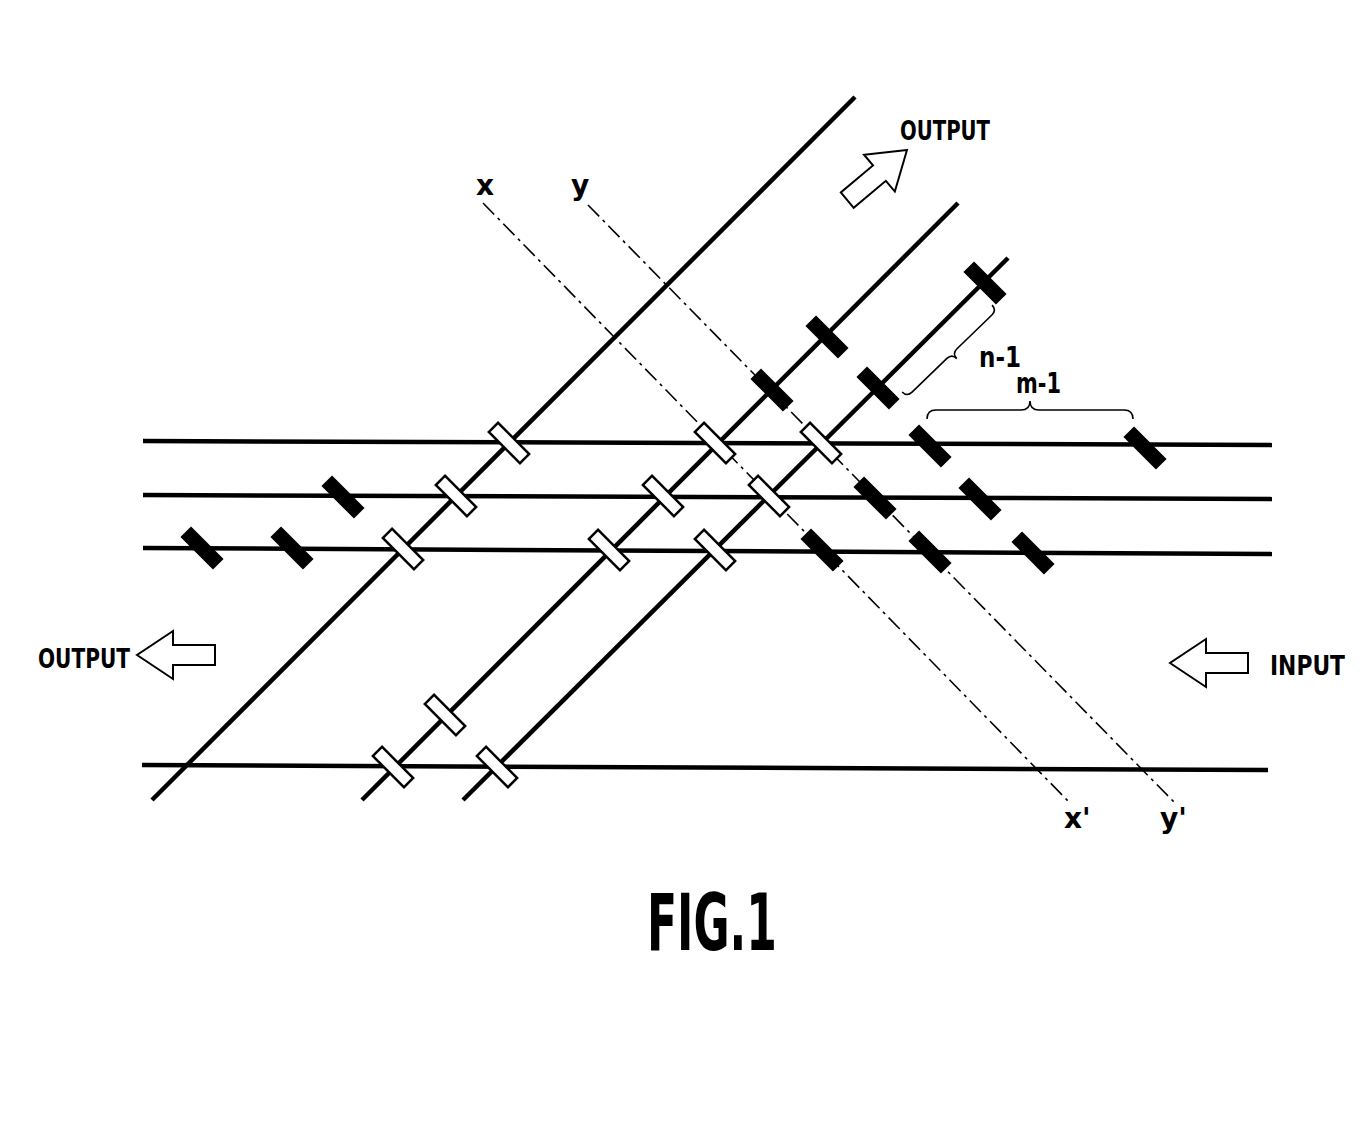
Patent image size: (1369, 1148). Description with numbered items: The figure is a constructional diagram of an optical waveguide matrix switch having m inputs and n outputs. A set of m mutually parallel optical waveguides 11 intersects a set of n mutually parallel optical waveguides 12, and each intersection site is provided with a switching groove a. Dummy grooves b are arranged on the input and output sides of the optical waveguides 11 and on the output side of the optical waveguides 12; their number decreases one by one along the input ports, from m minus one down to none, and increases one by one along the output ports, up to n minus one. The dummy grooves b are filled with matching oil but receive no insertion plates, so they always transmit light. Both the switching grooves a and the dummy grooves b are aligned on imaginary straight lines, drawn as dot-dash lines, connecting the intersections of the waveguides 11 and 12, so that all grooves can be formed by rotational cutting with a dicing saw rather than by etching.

The optical waveguides 11 is at (734, 610).
The optical waveguides 12 is at (600, 430).
The switching groove a is at (499, 429).
The dummy groove b is at (813, 321).